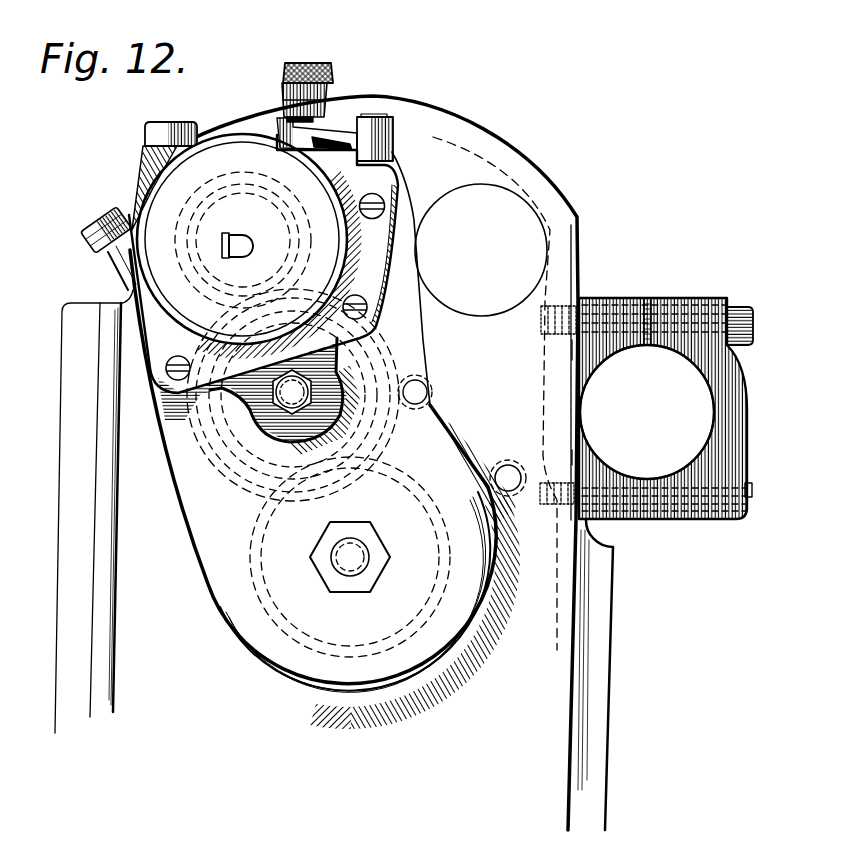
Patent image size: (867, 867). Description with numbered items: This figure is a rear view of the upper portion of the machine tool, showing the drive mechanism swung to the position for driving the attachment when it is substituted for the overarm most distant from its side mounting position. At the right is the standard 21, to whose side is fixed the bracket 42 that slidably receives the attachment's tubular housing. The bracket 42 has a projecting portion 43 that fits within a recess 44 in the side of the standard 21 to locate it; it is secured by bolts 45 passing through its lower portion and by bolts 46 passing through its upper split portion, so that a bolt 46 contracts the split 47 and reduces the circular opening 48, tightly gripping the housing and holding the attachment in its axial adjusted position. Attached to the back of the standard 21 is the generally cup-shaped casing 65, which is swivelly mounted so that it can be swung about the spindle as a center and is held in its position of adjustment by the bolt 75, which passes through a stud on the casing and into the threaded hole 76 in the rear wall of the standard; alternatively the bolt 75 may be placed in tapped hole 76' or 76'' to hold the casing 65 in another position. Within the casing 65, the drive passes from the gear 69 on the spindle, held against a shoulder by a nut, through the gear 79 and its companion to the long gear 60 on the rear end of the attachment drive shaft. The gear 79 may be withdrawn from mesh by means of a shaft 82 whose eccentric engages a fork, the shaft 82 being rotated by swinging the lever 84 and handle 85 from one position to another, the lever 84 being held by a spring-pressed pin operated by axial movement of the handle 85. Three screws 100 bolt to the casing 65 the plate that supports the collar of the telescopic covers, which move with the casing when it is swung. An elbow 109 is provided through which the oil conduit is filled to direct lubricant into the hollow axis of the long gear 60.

The standard 21 is at (558, 691).
The bracket 42 is at (730, 418).
The projecting portion 43 is at (571, 458).
The recess 44 is at (575, 357).
The bolts 45 is at (683, 521).
The bolts 46 is at (623, 300).
The split 47 is at (652, 313).
The circular opening 48 is at (690, 385).
The long gear 60 is at (145, 190).
The casing 65 is at (211, 523).
The gear 69 is at (268, 606).
The bolt 75 is at (290, 395).
The threaded hole 76 is at (248, 414).
The tapped hole 76' is at (444, 390).
The tapped hole 76'' is at (522, 509).
The gear 79 is at (250, 375).
The shaft 82 is at (377, 118).
The lever 84 is at (335, 140).
The handle 85 is at (308, 70).
The screws 100 is at (381, 199).
The elbow 109 is at (238, 243).